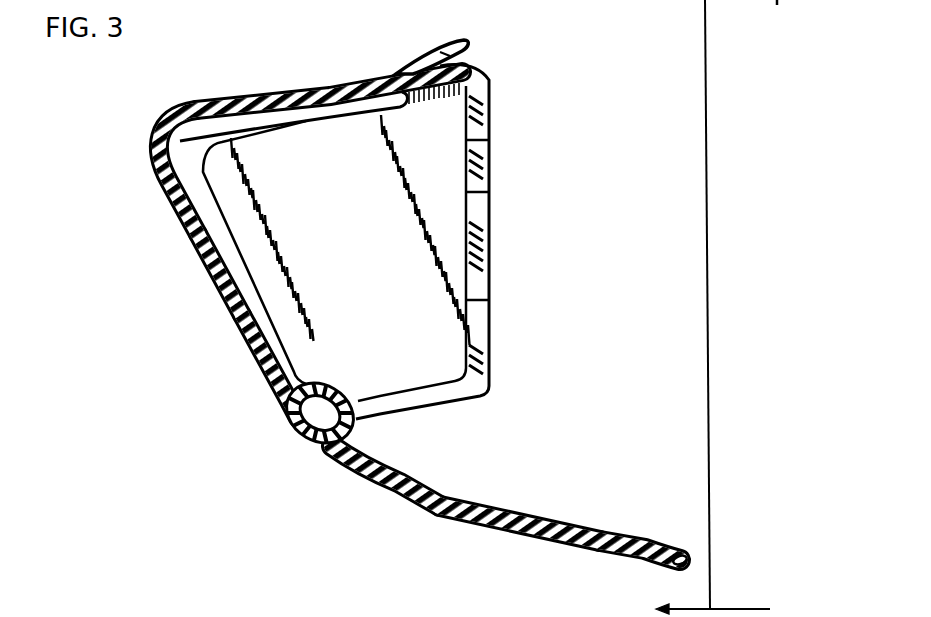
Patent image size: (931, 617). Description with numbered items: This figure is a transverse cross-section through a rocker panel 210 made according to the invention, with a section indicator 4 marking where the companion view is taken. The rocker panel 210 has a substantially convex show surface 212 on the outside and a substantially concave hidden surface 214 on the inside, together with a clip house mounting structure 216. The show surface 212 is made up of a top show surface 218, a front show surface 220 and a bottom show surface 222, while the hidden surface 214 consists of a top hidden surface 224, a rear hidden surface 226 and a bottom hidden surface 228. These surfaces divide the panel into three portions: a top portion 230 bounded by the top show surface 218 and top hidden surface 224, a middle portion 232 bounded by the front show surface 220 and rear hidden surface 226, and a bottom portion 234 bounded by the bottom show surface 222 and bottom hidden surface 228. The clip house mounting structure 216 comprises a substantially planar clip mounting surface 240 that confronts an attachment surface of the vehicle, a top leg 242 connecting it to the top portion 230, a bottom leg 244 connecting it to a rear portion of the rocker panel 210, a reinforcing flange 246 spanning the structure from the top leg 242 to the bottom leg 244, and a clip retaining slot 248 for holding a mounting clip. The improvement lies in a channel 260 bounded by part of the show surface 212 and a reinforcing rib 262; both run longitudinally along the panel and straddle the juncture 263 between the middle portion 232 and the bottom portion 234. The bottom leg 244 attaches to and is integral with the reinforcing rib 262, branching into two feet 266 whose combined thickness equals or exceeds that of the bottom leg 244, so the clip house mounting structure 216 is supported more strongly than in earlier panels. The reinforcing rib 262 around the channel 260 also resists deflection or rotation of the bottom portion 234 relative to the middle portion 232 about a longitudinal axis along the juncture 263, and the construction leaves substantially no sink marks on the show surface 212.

The rocker panel 210 is at (528, 105).
The show surface 212 is at (170, 208).
The hidden surface 214 is at (527, 508).
The clip house mounting structure 216 is at (480, 322).
The top show surface 218 is at (237, 97).
The front show surface 220 is at (205, 278).
The bottom show surface 222 is at (392, 497).
The top hidden surface 224 is at (262, 124).
The rear hidden surface 226 is at (260, 302).
The bottom hidden surface 228 is at (597, 530).
The top portion 230 is at (320, 88).
The middle portion 232 is at (262, 370).
The bottom portion 234 is at (495, 514).
The clip mounting surface 240 is at (494, 234).
The top leg 242 is at (465, 64).
The bottom leg 244 is at (387, 400).
The reinforcing flange 246 is at (348, 238).
The clip retaining slot 248 is at (487, 182).
The channel 260 is at (312, 425).
The reinforcing rib 262 is at (316, 447).
The juncture 263 is at (326, 458).
The feet 266 is at (333, 424).
The section line 4 is at (723, 308).